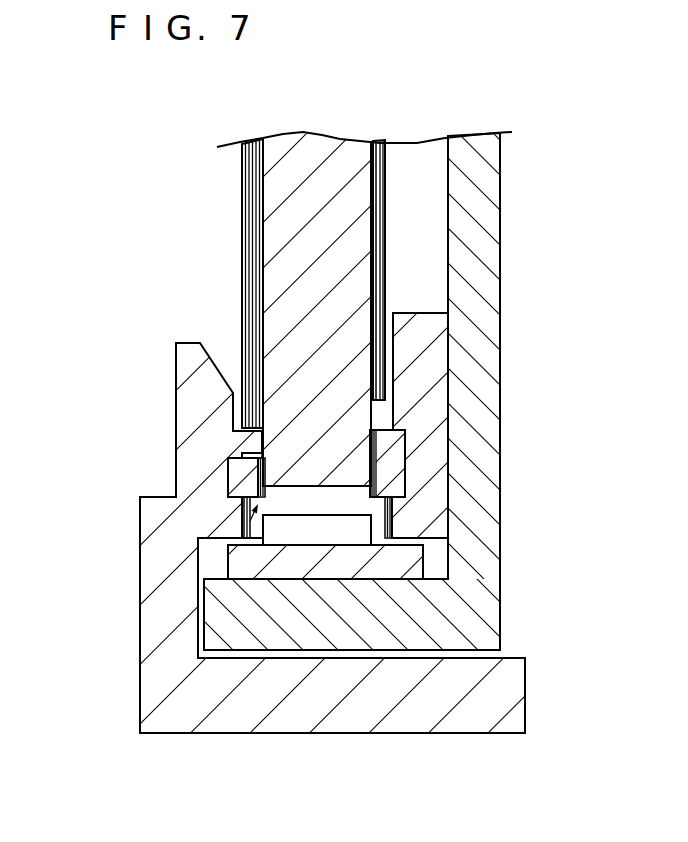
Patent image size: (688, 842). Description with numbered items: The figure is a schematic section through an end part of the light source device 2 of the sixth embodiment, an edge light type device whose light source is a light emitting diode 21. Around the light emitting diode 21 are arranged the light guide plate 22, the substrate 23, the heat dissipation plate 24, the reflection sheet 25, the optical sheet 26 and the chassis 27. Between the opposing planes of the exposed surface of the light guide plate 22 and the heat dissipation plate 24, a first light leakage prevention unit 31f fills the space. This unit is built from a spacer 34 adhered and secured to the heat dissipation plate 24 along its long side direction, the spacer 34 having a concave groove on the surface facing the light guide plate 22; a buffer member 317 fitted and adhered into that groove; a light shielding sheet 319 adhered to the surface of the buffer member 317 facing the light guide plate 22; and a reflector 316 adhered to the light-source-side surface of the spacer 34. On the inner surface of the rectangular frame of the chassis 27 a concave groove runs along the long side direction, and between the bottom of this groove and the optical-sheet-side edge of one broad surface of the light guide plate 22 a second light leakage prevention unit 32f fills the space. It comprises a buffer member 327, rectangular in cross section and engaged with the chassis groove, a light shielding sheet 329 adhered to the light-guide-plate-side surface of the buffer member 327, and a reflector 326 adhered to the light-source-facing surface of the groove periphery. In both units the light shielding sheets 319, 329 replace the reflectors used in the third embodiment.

The light source device 2 is at (106, 181).
The light emitting diode 21 is at (302, 532).
The light guide plate 22 is at (325, 136).
The substrate 23 is at (378, 570).
The heat dissipation plate 24 is at (477, 380).
The reflection sheet 25 is at (383, 163).
The optical sheet 26 is at (242, 188).
The chassis 27 is at (230, 718).
The spacer 34 is at (427, 342).
The reflector 316 is at (393, 513).
The buffer member 317 is at (393, 473).
The light shielding sheet 319 is at (374, 430).
The reflector 326 is at (242, 506).
The buffer member 327 is at (228, 475).
The light shielding sheet 329 is at (242, 452).
The first light leakage prevention unit 31f is at (437, 551).
The second light leakage prevention unit 32f is at (242, 526).